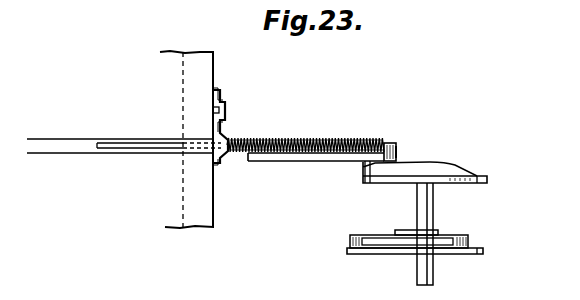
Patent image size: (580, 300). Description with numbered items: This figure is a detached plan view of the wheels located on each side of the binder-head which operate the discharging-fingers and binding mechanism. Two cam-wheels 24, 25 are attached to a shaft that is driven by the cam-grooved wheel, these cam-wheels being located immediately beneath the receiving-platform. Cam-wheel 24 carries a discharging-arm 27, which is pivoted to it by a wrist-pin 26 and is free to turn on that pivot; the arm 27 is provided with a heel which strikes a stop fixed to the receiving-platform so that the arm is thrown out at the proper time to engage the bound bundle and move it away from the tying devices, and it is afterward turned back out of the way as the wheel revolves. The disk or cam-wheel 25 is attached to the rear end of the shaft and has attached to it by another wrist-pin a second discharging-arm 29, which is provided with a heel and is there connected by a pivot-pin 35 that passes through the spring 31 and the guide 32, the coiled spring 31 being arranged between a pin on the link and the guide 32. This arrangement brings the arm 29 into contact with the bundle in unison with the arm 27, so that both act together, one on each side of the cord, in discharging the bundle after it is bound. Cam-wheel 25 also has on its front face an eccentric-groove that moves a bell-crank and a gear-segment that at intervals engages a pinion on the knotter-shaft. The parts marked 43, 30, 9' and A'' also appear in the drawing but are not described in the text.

The rod 43 is at (124, 135).
The guide 32 is at (233, 126).
The spring 31 is at (305, 135).
The spring end stop 30 is at (386, 141).
The discharging-arm 29 is at (316, 168).
The pivot-pin 35 is at (397, 151).
The cam-wheel 25 is at (439, 175).
The cam-wheel 24 is at (429, 252).
The wrist-pin 26 is at (345, 228).
The discharging-arm 27 is at (398, 229).
The shaft 9' is at (435, 234).
The wall A'' is at (197, 139).